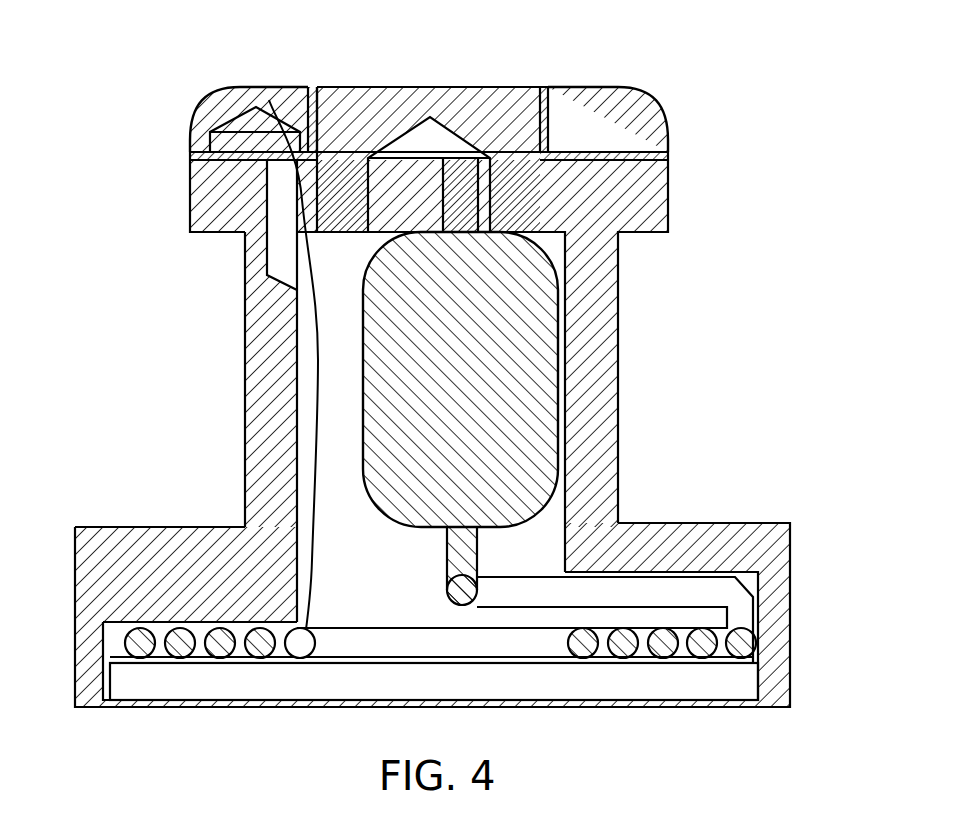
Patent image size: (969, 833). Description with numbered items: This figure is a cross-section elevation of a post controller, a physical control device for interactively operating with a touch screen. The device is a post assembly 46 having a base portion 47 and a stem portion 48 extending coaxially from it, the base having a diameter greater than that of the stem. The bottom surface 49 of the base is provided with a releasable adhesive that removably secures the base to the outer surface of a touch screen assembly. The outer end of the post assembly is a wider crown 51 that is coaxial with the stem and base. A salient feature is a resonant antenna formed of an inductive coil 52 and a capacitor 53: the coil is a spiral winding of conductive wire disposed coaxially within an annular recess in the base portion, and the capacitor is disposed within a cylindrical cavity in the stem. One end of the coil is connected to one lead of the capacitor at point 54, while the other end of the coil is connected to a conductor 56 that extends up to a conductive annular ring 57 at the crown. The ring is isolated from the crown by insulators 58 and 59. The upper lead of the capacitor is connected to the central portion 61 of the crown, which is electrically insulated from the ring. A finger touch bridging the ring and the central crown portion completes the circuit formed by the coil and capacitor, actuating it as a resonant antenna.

The post assembly 46 is at (712, 317).
The base portion 47 is at (793, 558).
The stem portion 48 is at (245, 358).
The bottom surface 49 is at (715, 707).
The crown 51 is at (668, 195).
The inductive coil 52 is at (178, 657).
The capacitor 53 is at (517, 402).
The connection point 54 is at (478, 580).
The conductor 56 is at (312, 472).
The conductive annular ring 57 is at (234, 98).
The insulator 58 is at (205, 152).
The insulator 59 is at (305, 113).
The central portion of the crown 61 is at (432, 88).